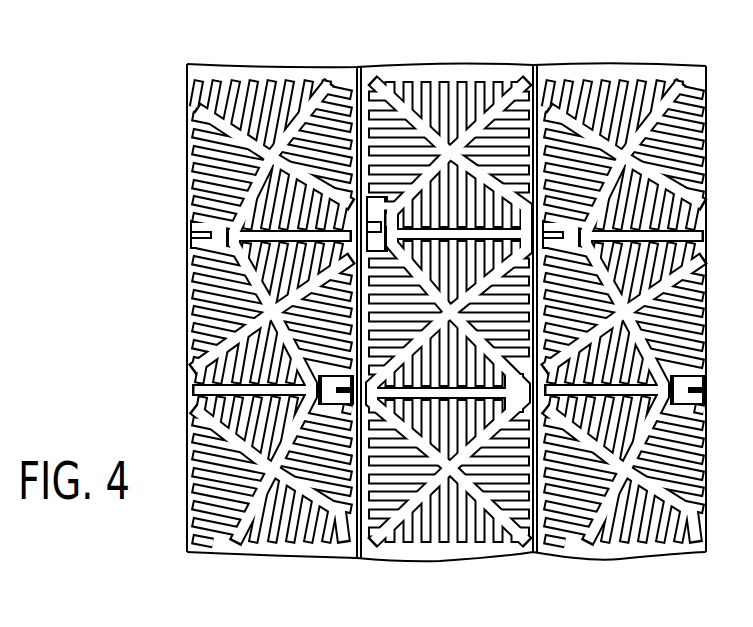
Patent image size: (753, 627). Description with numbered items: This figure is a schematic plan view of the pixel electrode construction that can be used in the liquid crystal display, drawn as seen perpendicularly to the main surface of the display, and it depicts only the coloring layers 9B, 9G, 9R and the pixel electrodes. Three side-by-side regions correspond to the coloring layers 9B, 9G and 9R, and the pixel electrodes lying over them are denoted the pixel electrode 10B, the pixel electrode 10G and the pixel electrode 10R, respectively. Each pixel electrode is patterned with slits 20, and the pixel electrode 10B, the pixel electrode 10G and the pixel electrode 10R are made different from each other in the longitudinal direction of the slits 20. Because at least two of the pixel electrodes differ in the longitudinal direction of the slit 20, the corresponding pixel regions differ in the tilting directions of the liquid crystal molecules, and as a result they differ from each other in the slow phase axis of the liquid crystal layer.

The coloring layer 9B is at (272, 282).
The pixel electrode 10B is at (335, 80).
The coloring layer 9G is at (448, 282).
The pixel electrode 10G is at (519, 78).
The coloring layer 9R is at (624, 282).
The pixel electrode 10R is at (680, 78).
The slit 20 is at (283, 537).